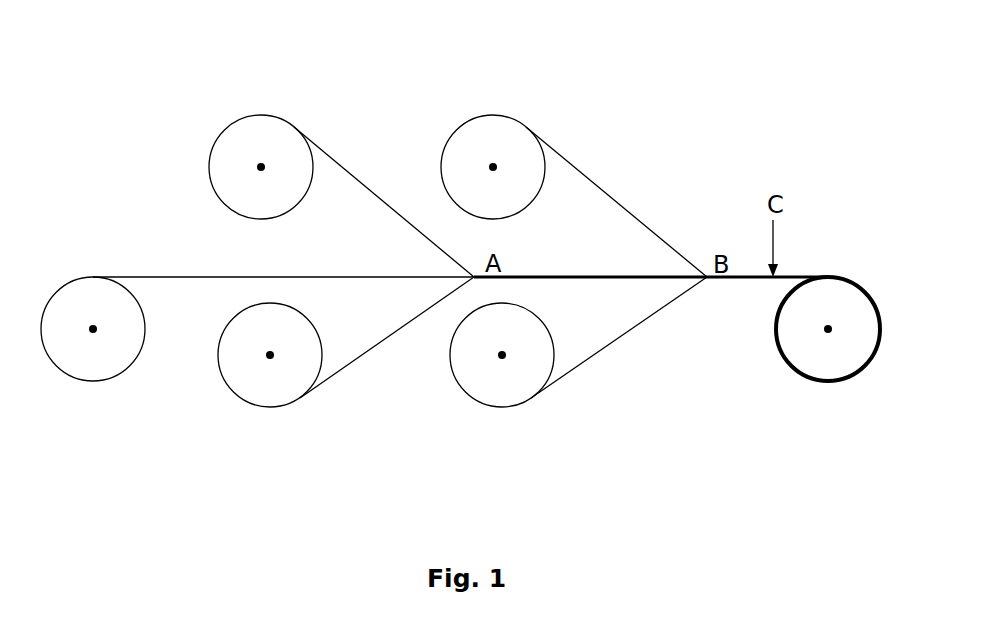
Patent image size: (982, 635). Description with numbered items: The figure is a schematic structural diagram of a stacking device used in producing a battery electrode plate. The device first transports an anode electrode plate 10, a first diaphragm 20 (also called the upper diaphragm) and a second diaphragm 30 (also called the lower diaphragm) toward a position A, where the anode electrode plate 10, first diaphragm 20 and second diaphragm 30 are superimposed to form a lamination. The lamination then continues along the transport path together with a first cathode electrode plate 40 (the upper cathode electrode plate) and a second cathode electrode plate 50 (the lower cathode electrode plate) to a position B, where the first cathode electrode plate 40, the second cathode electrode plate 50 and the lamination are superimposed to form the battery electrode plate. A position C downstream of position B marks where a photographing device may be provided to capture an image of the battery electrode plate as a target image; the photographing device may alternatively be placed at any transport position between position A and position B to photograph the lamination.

The anode electrode plate 10 is at (158, 276).
The first diaphragm 20 is at (338, 158).
The second diaphragm 30 is at (365, 353).
The first cathode electrode plate 40 is at (574, 160).
The second cathode electrode plate 50 is at (618, 340).